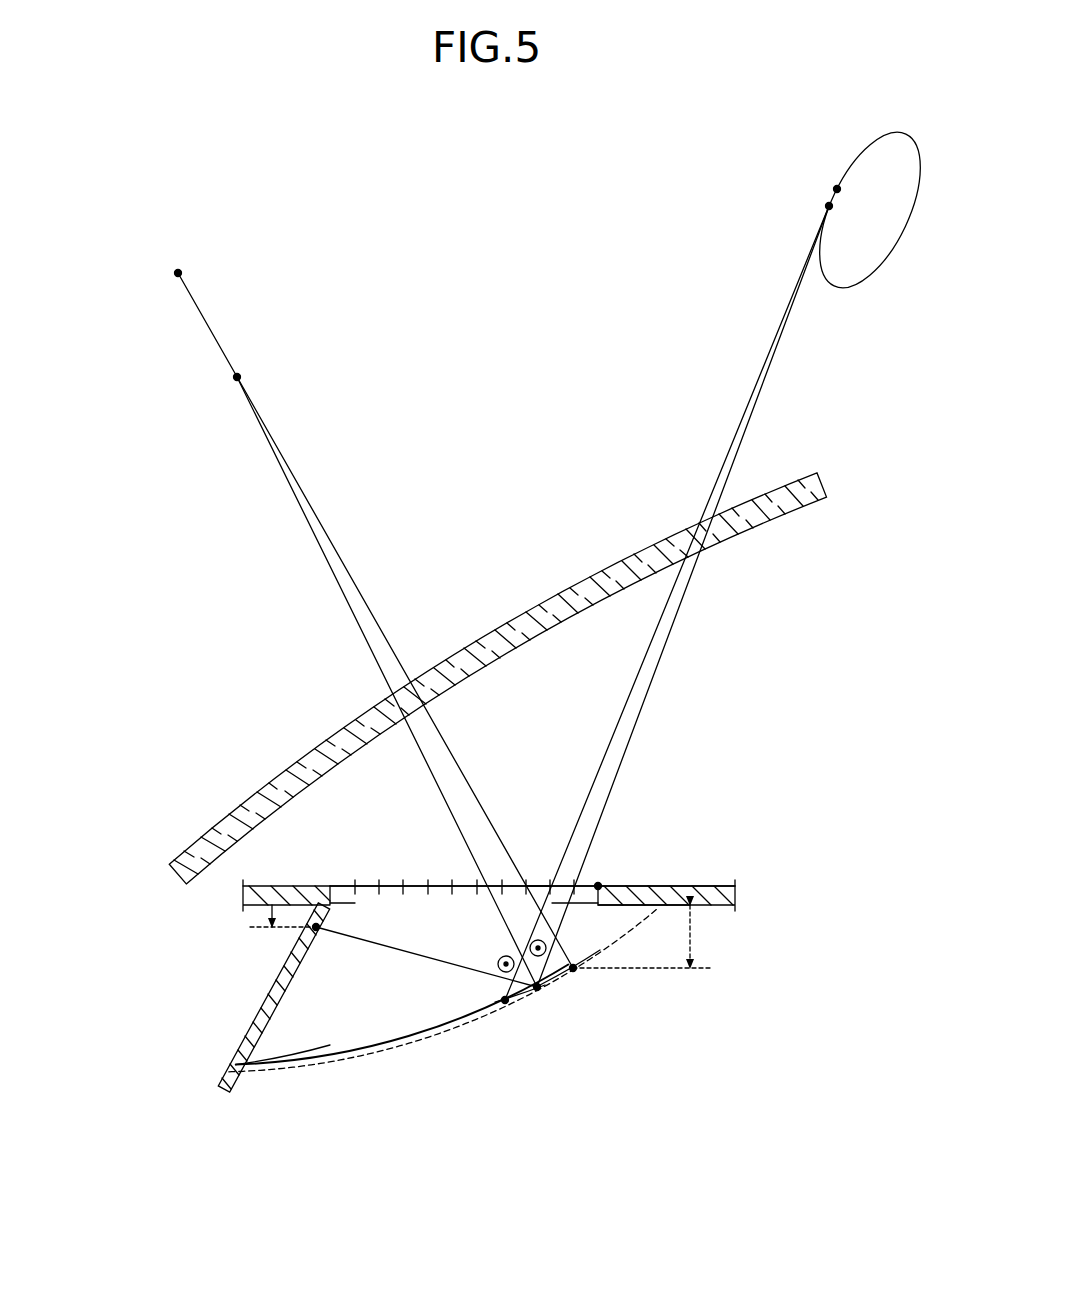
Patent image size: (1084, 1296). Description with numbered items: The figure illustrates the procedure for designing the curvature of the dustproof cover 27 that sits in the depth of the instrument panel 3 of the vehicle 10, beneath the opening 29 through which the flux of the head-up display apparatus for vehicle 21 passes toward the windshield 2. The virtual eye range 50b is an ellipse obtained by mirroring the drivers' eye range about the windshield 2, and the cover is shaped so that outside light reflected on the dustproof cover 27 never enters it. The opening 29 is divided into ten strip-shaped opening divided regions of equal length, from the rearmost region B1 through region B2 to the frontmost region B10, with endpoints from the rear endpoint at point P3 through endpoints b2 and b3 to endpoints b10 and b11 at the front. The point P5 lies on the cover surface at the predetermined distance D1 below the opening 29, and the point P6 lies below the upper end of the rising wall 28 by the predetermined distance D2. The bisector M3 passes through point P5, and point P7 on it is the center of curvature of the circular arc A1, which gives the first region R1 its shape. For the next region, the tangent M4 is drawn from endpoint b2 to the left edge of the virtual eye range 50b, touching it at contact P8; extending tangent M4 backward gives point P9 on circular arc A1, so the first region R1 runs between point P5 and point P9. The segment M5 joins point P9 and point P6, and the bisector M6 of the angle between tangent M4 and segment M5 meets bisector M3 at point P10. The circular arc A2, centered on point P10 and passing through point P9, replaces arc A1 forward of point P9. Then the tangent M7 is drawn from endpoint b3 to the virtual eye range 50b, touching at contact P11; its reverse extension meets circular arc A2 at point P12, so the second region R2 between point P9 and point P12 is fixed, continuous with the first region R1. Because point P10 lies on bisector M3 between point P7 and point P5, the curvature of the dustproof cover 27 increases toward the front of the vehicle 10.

The virtual eye range 50b is at (851, 172).
The contact P11 is at (835, 190).
The contact P8 is at (827, 207).
The point P7 is at (181, 273).
The point P10 is at (240, 378).
The bisector M3 is at (304, 490).
The bisector M6 is at (344, 600).
The tangent M7 is at (754, 398).
The tangent M4 is at (767, 388).
The vehicle 10 is at (195, 690).
The head-up display apparatus for vehicle 21 is at (680, 734).
The windshield 2 is at (206, 829).
The instrument panel 3 is at (722, 884).
The opening 29 is at (343, 884).
The endpoint b10 is at (356, 882).
The endpoint b11 is at (334, 884).
The endpoint b3 is at (546, 884).
The endpoint b2 is at (596, 884).
The point P3 is at (600, 888).
The opening divided region B10 is at (345, 904).
The opening divided region B2 is at (552, 903).
The opening divided region B1 is at (592, 906).
The predetermined distance D1 is at (693, 935).
The predetermined distance D2 is at (268, 915).
The rising wall 28 is at (250, 1000).
The point P6 is at (317, 931).
The segment M5 is at (401, 949).
The dustproof cover 27 is at (432, 1011).
The circular arc A1 is at (362, 1063).
The circular arc A2 is at (290, 1050).
The first region R1 is at (562, 977).
The second region R2 is at (526, 1003).
The point P12 is at (503, 999).
The point P9 is at (538, 991).
The point P5 is at (575, 970).